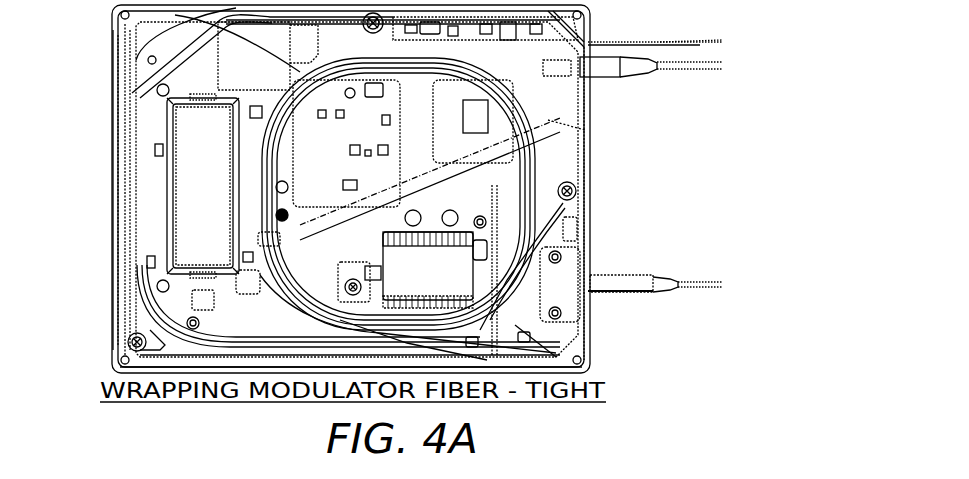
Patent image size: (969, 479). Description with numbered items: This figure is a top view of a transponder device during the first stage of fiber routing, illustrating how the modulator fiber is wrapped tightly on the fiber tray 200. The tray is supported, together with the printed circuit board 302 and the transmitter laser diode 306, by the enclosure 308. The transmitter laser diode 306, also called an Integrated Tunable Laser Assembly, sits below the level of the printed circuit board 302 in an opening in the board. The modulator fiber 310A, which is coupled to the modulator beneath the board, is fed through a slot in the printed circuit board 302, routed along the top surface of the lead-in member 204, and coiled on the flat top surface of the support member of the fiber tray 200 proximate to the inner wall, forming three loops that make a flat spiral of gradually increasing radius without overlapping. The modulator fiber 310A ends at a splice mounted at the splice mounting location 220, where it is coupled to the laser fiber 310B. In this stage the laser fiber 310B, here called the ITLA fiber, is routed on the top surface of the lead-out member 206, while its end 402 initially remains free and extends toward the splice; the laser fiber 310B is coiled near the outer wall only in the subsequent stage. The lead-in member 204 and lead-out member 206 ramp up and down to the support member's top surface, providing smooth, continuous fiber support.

The fiber tray 200 is at (577, 147).
The lead-in member 204 is at (138, 322).
The lead-out member 206 is at (138, 58).
The splice mounting location 220 is at (560, 137).
The printed circuit board 302 is at (203, 169).
The transmitter laser diode 306 is at (412, 270).
The enclosure 308 is at (585, 333).
The modulator fiber 310A is at (560, 220).
The laser fiber 310B is at (677, 43).
The end of the laser fiber 402 is at (744, 44).